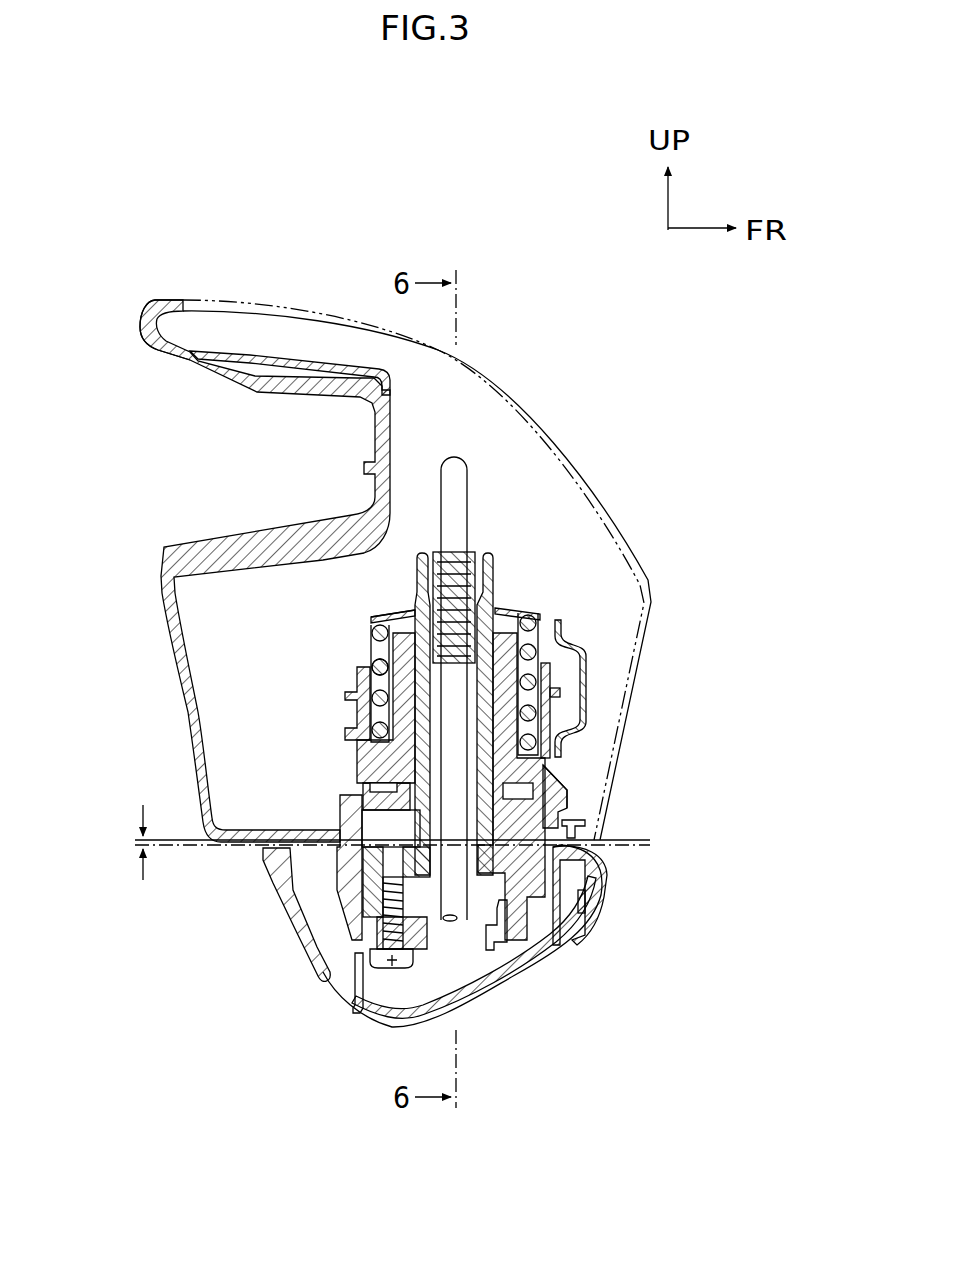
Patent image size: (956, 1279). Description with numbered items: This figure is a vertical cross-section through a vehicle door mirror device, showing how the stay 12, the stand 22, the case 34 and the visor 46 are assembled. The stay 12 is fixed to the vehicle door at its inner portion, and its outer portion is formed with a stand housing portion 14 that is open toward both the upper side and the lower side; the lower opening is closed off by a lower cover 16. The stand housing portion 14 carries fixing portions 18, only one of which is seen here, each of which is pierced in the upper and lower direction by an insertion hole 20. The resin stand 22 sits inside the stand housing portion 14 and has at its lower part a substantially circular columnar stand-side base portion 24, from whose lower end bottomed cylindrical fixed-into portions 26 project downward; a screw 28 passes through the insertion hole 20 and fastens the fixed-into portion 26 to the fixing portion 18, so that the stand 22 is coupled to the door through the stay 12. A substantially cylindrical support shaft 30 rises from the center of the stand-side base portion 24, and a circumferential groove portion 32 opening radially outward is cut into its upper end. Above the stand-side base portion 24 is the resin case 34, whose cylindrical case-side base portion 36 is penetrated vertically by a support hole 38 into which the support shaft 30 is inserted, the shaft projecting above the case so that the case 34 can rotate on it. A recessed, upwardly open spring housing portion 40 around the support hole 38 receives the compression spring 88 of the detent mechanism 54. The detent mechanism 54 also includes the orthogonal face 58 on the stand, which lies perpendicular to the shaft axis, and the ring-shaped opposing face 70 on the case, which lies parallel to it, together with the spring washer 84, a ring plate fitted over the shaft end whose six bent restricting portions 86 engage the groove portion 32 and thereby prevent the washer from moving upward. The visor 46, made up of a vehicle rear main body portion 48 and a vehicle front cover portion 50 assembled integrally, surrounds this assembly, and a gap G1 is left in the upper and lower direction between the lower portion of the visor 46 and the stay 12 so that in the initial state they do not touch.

The stay 12 is at (281, 921).
The stand housing portion 14 is at (467, 953).
The lower cover 16 is at (380, 1025).
The fixing portion 18 is at (443, 938).
The insertion hole 20 is at (360, 947).
The stand 22 is at (491, 550).
The stand-side base portion 24 is at (553, 867).
The fixed-into portion 26 is at (360, 905).
The screw 28 is at (406, 960).
The support shaft 30 is at (497, 565).
The groove portion 32 is at (503, 614).
The case 34 is at (566, 784).
The case-side base portion 36 is at (356, 775).
The support hole 38 is at (413, 657).
The spring housing portion 40 is at (368, 717).
The visor 46 is at (148, 298).
The main body portion 48 is at (140, 328).
The cover portion 50 is at (508, 389).
The detent mechanism 54 is at (399, 666).
The orthogonal face 58 is at (578, 812).
The opposing face 70 is at (541, 767).
The spring washer 84 is at (377, 620).
The restricting portion 86 is at (411, 611).
The compression spring 88 is at (372, 662).
The gap G1 is at (356, 842).